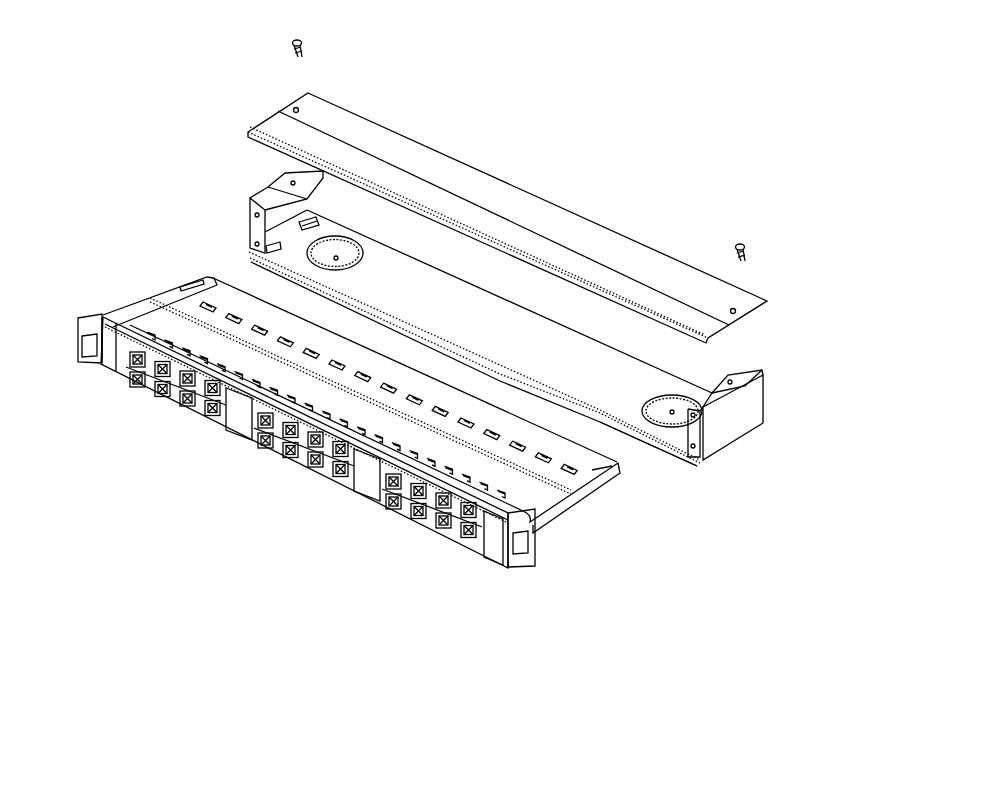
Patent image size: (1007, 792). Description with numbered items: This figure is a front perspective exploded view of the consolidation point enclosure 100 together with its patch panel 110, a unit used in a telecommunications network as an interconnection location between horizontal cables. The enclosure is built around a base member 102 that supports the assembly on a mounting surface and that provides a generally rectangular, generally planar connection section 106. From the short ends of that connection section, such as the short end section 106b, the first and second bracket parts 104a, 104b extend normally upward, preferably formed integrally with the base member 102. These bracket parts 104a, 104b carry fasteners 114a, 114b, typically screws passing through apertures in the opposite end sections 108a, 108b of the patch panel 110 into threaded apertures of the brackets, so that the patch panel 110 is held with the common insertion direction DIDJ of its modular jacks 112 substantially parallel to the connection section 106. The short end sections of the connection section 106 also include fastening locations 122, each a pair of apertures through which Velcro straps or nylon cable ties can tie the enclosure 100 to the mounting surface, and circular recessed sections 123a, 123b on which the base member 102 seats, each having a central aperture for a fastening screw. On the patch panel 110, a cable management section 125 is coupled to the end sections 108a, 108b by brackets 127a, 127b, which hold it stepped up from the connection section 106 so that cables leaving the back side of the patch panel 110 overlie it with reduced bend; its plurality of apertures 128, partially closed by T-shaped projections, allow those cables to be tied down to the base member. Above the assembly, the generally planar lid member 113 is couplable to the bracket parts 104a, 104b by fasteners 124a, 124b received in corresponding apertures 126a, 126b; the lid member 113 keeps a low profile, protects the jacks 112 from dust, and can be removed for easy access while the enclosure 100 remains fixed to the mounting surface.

The consolidation point enclosure 100 is at (572, 226).
The base member 102 is at (435, 307).
The first bracket part 104a is at (260, 192).
The second bracket part 104b is at (743, 414).
The generally planar connection section 106 is at (505, 342).
The short end section 106b is at (565, 0).
The end section of patch panel 108a is at (90, 364).
The end section of patch panel 108b is at (513, 562).
The patch panel 110 is at (238, 427).
The modular jacks 112 is at (337, 475).
The lid member 113 is at (462, 177).
The fastener 114a is at (253, 230).
The fastener 114b is at (693, 430).
The fastening locations 122 is at (273, 252).
The circular recessed section 123a is at (345, 267).
The circular recessed section 123b is at (672, 422).
The fastener 124a is at (294, 50).
The fastener 124b is at (742, 252).
The cable management section 125 is at (383, 377).
The aperture 126a is at (292, 107).
The aperture 126b is at (735, 310).
The bracket 127a is at (148, 300).
The bracket 127b is at (560, 517).
The apertures 128 is at (497, 430).
The common insertion direction of modular jacks DIDJ is at (192, 414).